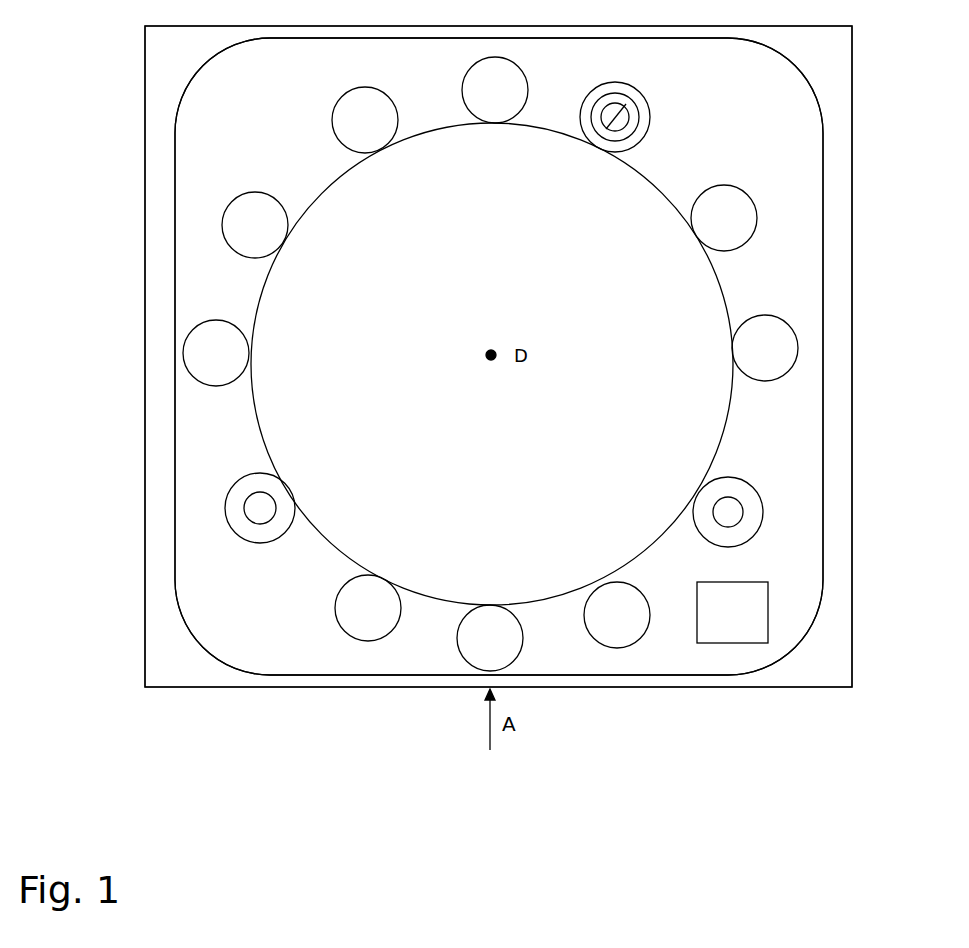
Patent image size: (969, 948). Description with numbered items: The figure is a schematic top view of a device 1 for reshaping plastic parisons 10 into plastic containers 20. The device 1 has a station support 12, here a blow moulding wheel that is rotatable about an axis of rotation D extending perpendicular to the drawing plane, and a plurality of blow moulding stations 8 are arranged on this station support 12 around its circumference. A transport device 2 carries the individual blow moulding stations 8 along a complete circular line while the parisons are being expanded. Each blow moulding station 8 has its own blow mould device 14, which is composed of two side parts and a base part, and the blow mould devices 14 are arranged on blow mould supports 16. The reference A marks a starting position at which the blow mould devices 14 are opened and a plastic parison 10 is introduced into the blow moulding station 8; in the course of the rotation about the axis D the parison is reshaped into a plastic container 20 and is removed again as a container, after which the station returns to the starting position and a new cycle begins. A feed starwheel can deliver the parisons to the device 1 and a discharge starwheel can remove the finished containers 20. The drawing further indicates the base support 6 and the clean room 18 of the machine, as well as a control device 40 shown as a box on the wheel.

The device 1 is at (128, 278).
The transport device 2 is at (212, 272).
The base support 6 is at (252, 583).
The blow moulding station 8 is at (733, 207).
The plastic parison 10 is at (732, 515).
The station support 12 is at (698, 360).
The blow mould device 14 is at (622, 123).
The blow mould support 16 is at (641, 99).
The clean room 18 is at (145, 557).
The plastic container 20 is at (262, 508).
The control device 40 is at (732, 612).